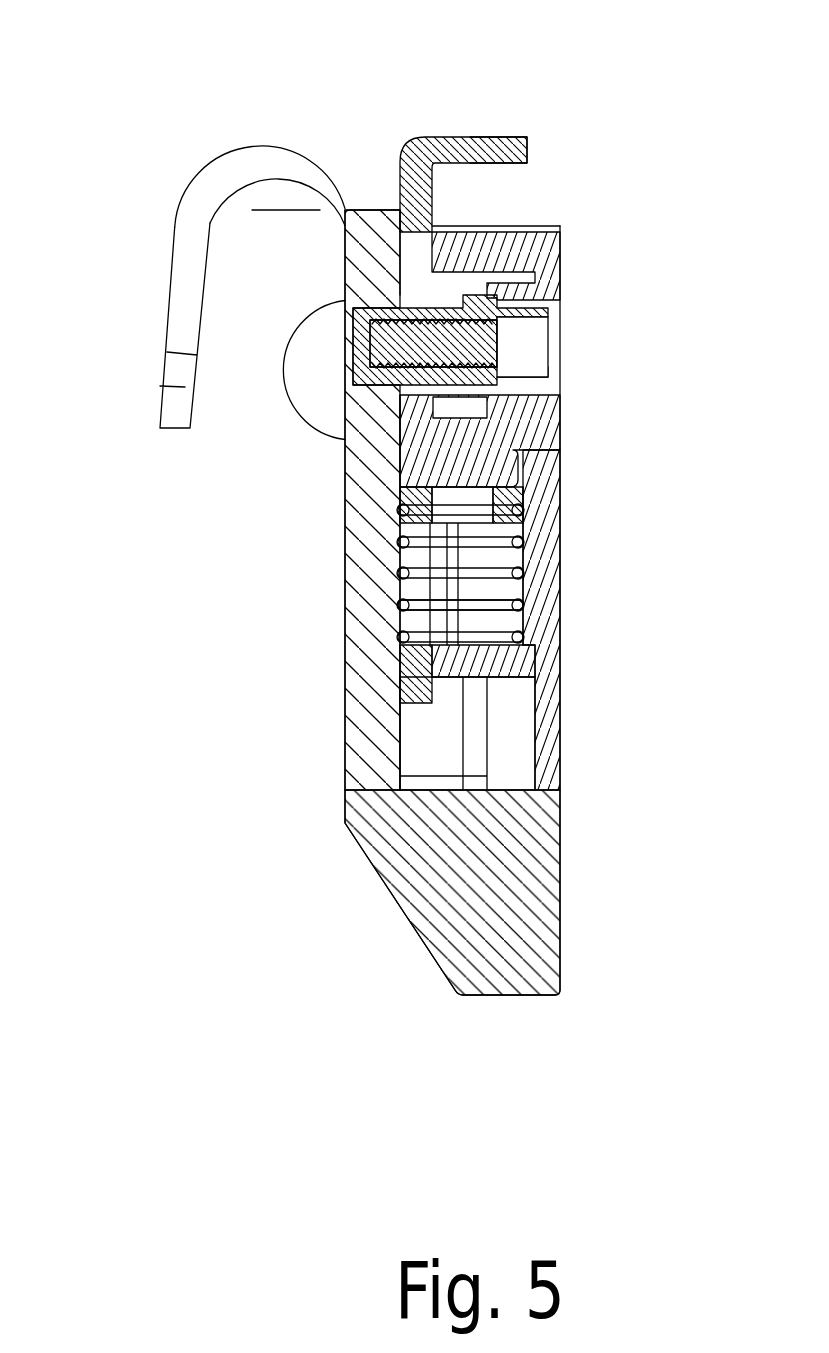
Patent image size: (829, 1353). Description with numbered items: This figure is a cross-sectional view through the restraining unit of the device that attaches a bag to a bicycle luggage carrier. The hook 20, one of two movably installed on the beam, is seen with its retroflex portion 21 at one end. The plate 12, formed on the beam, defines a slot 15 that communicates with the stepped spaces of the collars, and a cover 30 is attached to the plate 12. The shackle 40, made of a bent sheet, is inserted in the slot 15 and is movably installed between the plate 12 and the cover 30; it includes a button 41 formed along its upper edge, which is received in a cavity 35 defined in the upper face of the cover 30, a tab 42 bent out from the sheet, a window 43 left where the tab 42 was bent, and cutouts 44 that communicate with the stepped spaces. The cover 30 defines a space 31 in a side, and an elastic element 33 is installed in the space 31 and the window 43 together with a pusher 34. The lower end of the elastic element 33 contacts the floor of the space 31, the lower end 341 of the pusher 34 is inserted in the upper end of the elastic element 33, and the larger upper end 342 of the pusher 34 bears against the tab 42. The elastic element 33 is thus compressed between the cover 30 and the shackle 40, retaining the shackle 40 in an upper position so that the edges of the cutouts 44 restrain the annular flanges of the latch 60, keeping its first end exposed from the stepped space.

The plate 12 is at (357, 678).
The slot 15 is at (237, 212).
The hook 20 is at (143, 389).
The retroflex portion 21 is at (271, 150).
The cover 30 is at (563, 702).
The space 31 is at (503, 560).
The elastic element 33 is at (495, 604).
The pusher 34 is at (478, 500).
The lower end 341 is at (402, 532).
The upper end 342 is at (402, 493).
The cavity 35 is at (518, 226).
The shackle 40 is at (409, 137).
The button 41 is at (510, 137).
The tab 42 is at (518, 460).
The window 43 is at (410, 622).
The cutout 44 is at (415, 277).
The latch 60 is at (320, 410).